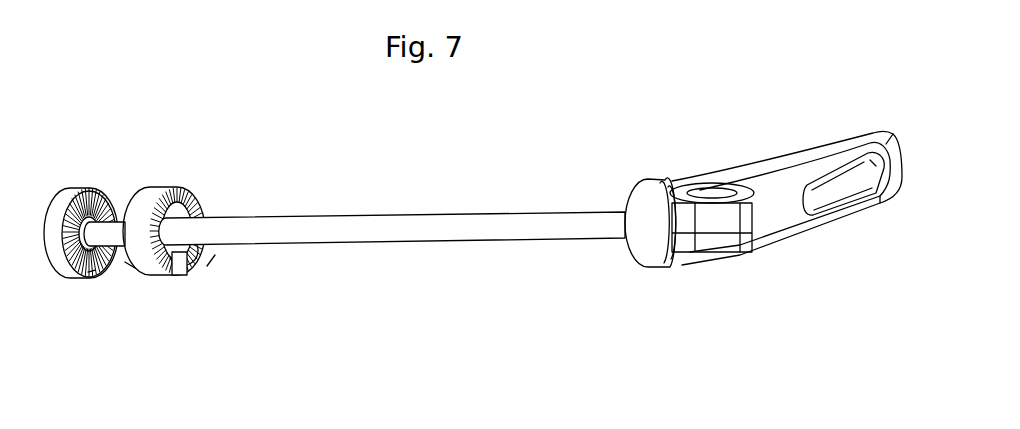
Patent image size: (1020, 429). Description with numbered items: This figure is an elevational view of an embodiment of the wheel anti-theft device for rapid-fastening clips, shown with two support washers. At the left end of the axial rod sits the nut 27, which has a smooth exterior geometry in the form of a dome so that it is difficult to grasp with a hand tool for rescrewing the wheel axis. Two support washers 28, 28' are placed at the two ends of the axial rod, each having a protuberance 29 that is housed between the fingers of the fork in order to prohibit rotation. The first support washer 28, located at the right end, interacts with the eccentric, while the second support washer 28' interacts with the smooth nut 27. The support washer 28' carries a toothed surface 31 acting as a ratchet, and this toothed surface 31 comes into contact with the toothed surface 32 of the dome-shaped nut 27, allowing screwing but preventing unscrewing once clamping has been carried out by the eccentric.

The nut 27 is at (58, 212).
The support washer 28' is at (184, 179).
The support washer 28 is at (599, 172).
The protuberance 29 is at (207, 267).
The toothed surface 31 is at (133, 267).
The toothed surface 32 is at (92, 273).